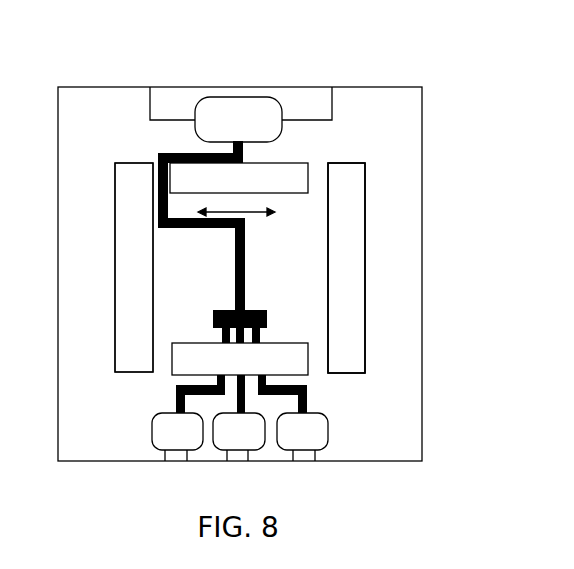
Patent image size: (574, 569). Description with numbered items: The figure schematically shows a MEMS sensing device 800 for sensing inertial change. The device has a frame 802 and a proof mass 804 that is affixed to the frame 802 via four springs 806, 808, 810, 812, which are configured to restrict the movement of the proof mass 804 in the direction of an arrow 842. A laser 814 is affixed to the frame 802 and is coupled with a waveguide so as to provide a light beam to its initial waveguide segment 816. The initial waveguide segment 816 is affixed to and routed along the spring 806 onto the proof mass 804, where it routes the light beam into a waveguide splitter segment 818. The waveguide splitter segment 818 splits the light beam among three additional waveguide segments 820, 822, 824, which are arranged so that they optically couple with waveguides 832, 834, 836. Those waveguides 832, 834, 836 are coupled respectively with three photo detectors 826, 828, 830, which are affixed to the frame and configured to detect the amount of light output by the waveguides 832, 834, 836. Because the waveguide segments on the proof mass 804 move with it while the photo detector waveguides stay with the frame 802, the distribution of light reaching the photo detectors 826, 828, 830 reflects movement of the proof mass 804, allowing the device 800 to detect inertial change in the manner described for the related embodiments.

The MEMS sensing device 800 is at (290, 50).
The frame 802 is at (116, 87).
The proof mass 804 is at (328, 272).
The spring 806 is at (152, 182).
The spring 808 is at (328, 178).
The spring 810 is at (152, 358).
The spring 812 is at (328, 358).
The laser 814 is at (195, 130).
The initial waveguide segment 816 is at (235, 304).
The waveguide splitter segment 818 is at (267, 312).
The additional waveguide segment 820 is at (222, 335).
The additional waveguide segment 822 is at (240, 345).
The additional waveguide segment 824 is at (260, 335).
The photo detector 826 is at (328, 432).
The photo detector 828 is at (262, 448).
The photo detector 830 is at (155, 432).
The waveguide 832 is at (307, 400).
The waveguide 834 is at (246, 396).
The waveguide 836 is at (176, 400).
The arrow 842 is at (274, 215).